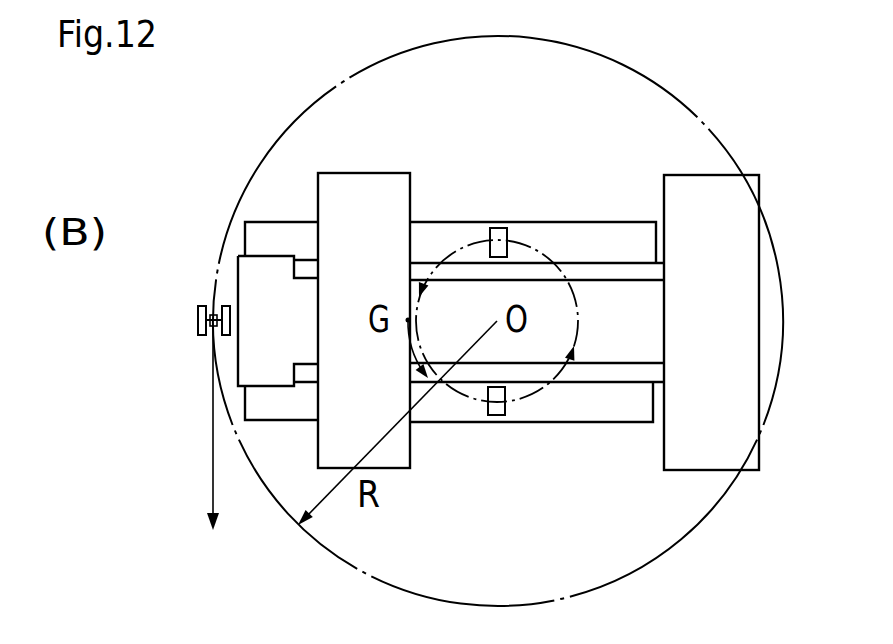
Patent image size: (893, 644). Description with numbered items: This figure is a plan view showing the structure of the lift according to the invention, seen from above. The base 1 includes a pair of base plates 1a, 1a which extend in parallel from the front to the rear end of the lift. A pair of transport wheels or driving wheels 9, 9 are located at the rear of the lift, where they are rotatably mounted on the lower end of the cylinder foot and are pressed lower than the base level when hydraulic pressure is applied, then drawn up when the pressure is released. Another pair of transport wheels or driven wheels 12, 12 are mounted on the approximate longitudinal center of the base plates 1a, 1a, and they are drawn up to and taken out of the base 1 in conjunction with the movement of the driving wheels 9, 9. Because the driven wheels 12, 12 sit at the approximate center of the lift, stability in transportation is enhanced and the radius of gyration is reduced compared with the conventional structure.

The base 1 is at (682, 193).
The base plate 1a is at (456, 238).
The driving wheel 9 is at (197, 336).
The driven wheel 12 is at (497, 423).